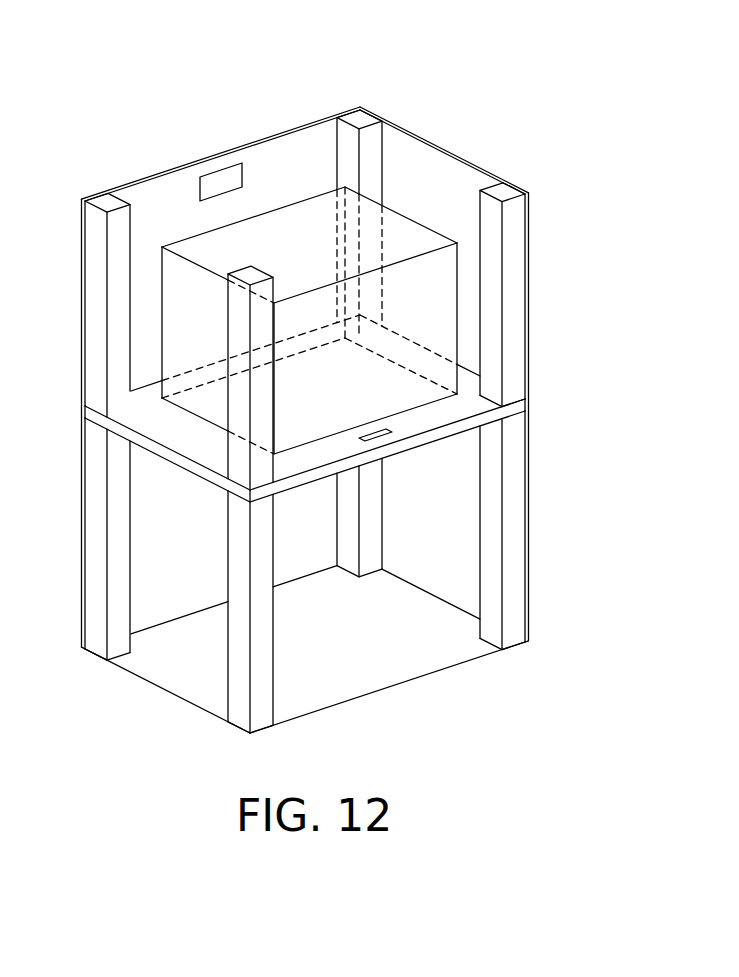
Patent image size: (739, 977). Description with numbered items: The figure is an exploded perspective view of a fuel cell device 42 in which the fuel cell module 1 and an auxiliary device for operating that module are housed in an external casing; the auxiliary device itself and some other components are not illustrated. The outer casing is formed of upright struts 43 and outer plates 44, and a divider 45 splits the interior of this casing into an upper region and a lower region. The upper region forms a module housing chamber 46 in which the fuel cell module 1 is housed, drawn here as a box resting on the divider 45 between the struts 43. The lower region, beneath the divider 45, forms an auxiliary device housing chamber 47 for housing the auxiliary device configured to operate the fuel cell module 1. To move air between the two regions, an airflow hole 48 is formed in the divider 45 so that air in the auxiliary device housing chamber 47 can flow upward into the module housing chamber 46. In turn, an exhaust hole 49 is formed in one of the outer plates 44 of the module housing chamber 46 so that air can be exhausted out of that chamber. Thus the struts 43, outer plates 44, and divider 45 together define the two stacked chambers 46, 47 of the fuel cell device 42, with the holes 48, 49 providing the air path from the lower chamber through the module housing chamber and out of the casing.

The fuel cell module 1 is at (408, 233).
The fuel cell device 42 is at (254, 59).
The struts 43 is at (107, 197).
The outer plates 44 is at (398, 124).
The divider 45 is at (513, 411).
The module housing chamber 46 is at (416, 174).
The auxiliary device housing chamber 47 is at (160, 543).
The airflow hole 48 is at (391, 432).
The exhaust hole 49 is at (215, 178).